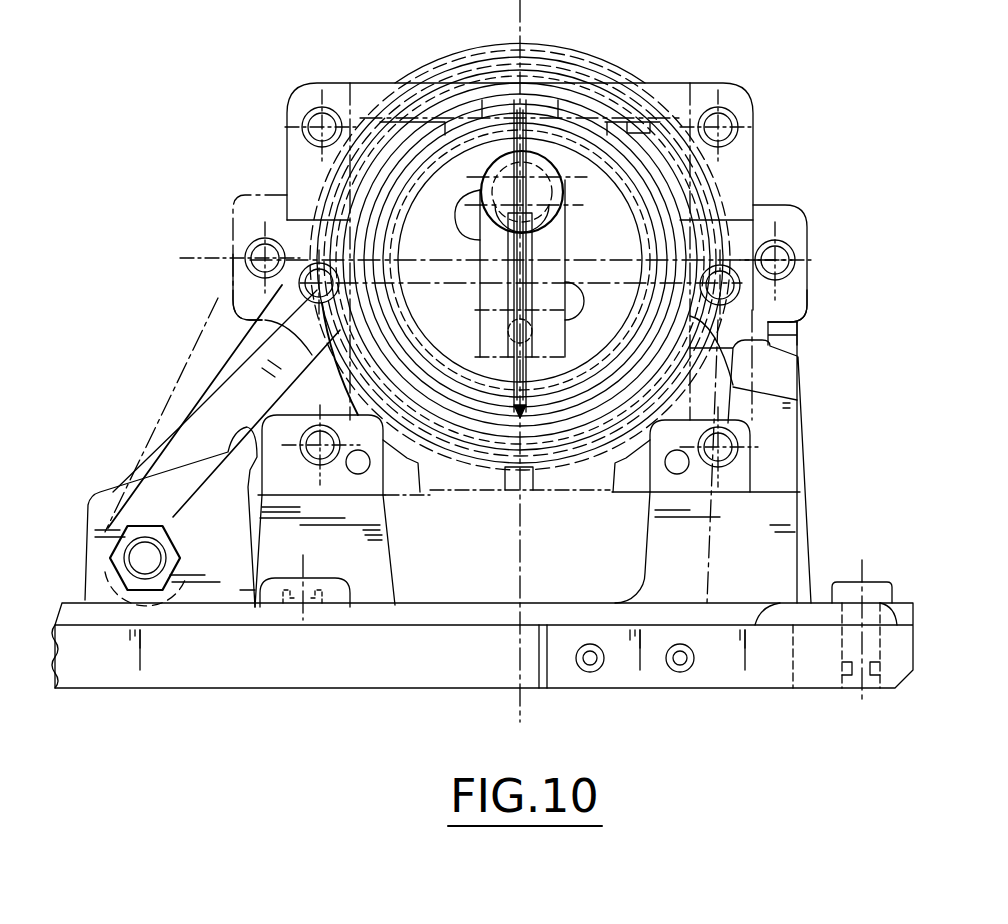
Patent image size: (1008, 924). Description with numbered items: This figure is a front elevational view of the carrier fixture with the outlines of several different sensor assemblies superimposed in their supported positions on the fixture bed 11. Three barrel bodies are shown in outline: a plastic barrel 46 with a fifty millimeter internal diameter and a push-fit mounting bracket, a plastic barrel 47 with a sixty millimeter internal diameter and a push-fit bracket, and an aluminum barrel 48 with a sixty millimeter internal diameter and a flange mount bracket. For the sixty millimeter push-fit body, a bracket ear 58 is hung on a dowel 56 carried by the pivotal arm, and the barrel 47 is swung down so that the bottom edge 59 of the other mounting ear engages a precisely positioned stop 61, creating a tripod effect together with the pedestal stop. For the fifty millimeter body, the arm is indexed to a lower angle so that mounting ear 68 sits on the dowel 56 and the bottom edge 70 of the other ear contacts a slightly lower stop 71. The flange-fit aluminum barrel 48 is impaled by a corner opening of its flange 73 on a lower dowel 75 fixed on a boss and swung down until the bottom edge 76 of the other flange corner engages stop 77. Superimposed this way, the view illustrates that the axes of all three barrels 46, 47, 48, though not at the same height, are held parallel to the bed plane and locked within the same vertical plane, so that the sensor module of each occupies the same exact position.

The fixture bed 11 is at (495, 665).
The plastic barrel 46 is at (486, 468).
The plastic barrel 47 is at (459, 416).
The aluminum barrel 48 is at (297, 402).
The dowel 56 is at (300, 286).
The bracket ear 58 is at (240, 200).
The bottom edge 59 is at (797, 322).
The stop 61 is at (785, 322).
The mounting ear 68 is at (275, 340).
The bottom edge 70 is at (797, 400).
The stop 71 is at (797, 356).
The flange 73 is at (277, 382).
The dowel 75 is at (312, 455).
The bottom edge 76 is at (690, 494).
The stop 77 is at (775, 492).